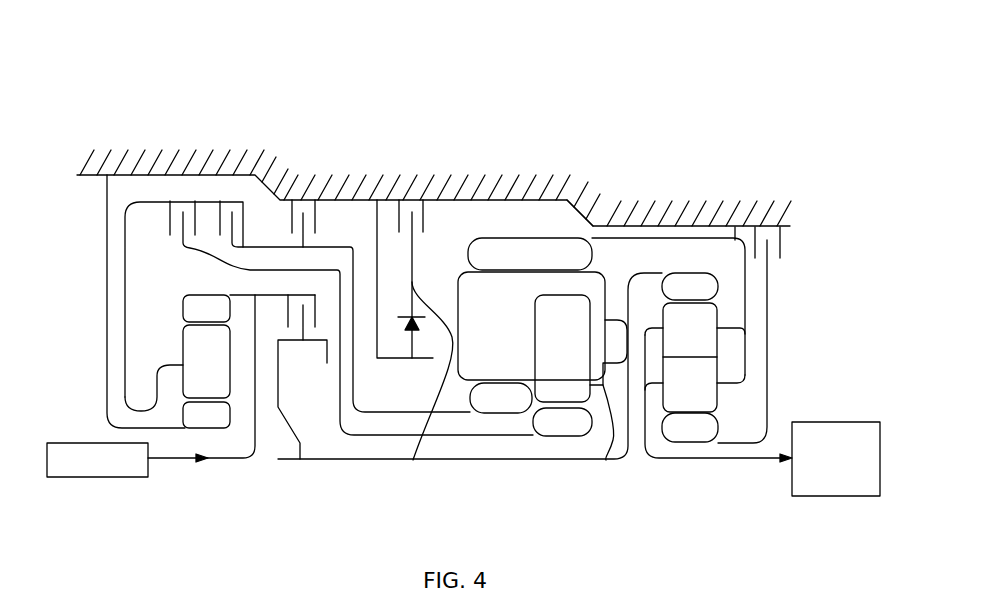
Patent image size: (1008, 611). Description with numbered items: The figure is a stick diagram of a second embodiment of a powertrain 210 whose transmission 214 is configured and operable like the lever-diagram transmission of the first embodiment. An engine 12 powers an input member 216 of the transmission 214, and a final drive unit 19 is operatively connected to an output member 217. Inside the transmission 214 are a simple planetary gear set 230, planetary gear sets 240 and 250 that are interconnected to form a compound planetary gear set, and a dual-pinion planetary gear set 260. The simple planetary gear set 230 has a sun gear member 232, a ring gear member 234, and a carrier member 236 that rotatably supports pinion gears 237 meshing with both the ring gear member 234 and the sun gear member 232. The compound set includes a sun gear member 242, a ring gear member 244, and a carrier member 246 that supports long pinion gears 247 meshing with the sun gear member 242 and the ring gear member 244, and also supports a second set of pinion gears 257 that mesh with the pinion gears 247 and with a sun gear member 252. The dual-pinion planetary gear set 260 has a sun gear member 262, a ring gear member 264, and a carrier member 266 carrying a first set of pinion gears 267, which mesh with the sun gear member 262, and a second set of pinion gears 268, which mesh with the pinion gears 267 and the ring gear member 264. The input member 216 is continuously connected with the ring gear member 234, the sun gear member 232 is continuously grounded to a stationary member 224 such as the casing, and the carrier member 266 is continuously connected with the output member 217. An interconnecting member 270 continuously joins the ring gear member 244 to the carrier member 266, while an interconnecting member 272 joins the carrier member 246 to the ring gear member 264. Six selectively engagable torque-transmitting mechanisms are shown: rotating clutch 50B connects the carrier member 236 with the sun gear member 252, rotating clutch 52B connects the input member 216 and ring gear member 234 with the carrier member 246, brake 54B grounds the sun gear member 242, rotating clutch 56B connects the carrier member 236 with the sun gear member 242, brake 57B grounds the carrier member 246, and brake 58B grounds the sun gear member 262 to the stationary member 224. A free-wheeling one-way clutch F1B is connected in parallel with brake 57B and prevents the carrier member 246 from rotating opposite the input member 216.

The powertrain 210 is at (372, 88).
The transmission 214 is at (520, 105).
The stationary member 224 is at (565, 200).
The interconnecting member 270 is at (735, 227).
The interconnecting member 272 is at (633, 277).
The torque-transmitting mechanism 50B is at (176, 240).
The torque-transmitting mechanism 56B is at (238, 232).
The torque-transmitting mechanism 54B is at (312, 232).
The torque-transmitting mechanism 57B is at (418, 238).
The torque-transmitting mechanism 58B is at (774, 258).
The free-wheeling one-way clutch F1B is at (393, 330).
The torque-transmitting mechanism 52B is at (290, 340).
The engine 12 is at (127, 478).
The input member 216 is at (178, 460).
The simple planetary gear set 230 is at (226, 444).
The sun gear member 232 is at (193, 426).
The ring gear member 234 is at (193, 319).
The carrier member 236 is at (168, 364).
The pinion gears 237 is at (193, 373).
The planetary gear set 240 is at (492, 420).
The sun gear member 242 is at (488, 408).
The ring gear member 244 is at (517, 265).
The carrier member 246 is at (413, 460).
The pinion gears 247 is at (484, 341).
The planetary gear set 250 is at (560, 443).
The sun gear member 252 is at (549, 432).
The pinion gears 257 is at (549, 361).
The dual-pinion planetary gear set 260 is at (683, 452).
The sun gear member 262 is at (677, 437).
The ring gear member 264 is at (677, 297).
The carrier member 266 is at (641, 370).
The pinion gears 267 is at (677, 395).
The pinion gears 268 is at (677, 340).
The output member 217 is at (735, 460).
The final drive unit 19 is at (832, 422).